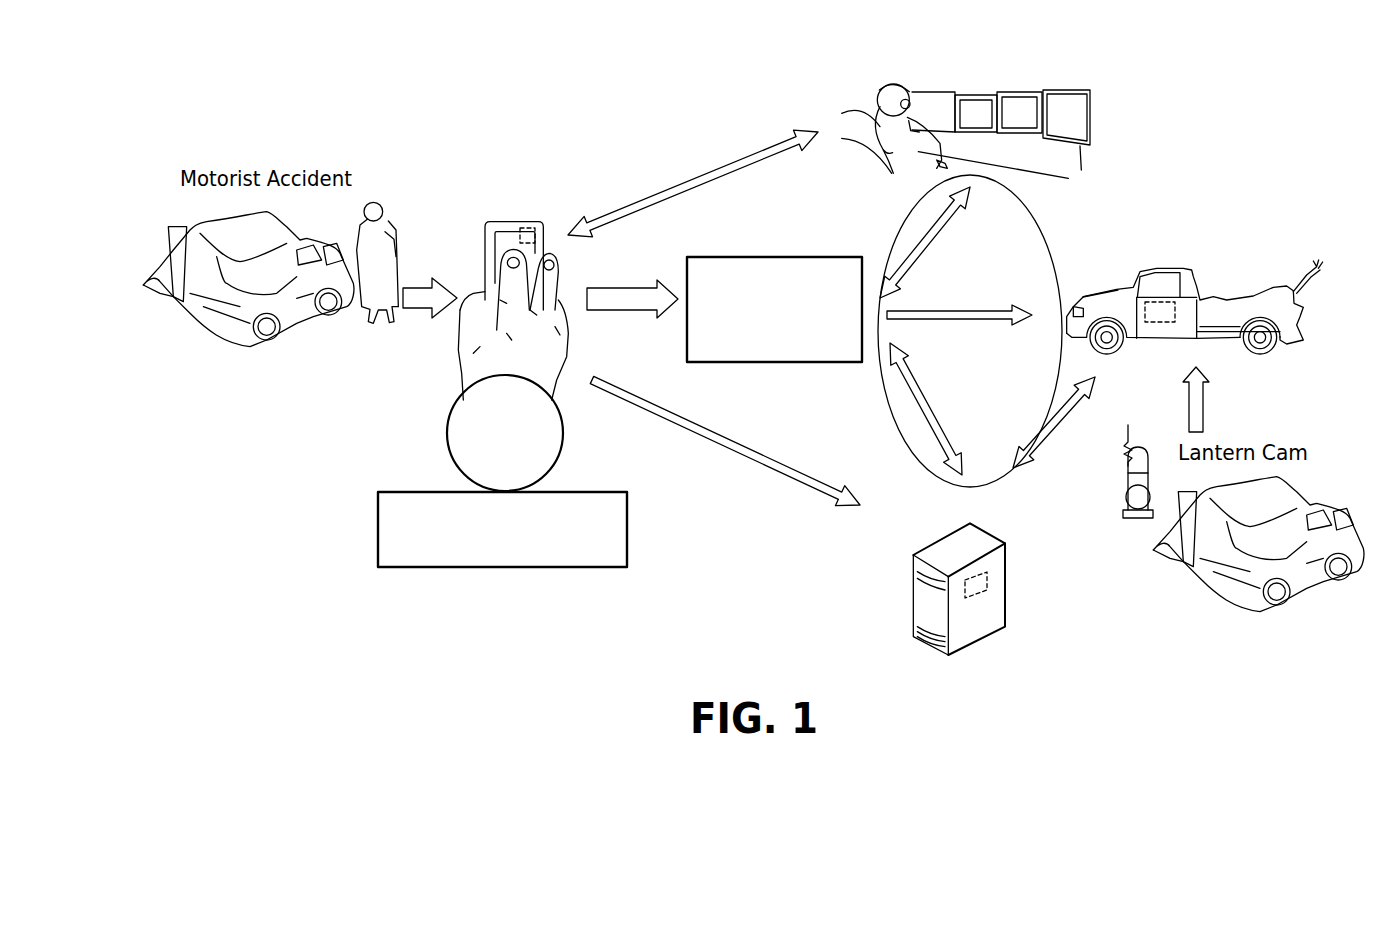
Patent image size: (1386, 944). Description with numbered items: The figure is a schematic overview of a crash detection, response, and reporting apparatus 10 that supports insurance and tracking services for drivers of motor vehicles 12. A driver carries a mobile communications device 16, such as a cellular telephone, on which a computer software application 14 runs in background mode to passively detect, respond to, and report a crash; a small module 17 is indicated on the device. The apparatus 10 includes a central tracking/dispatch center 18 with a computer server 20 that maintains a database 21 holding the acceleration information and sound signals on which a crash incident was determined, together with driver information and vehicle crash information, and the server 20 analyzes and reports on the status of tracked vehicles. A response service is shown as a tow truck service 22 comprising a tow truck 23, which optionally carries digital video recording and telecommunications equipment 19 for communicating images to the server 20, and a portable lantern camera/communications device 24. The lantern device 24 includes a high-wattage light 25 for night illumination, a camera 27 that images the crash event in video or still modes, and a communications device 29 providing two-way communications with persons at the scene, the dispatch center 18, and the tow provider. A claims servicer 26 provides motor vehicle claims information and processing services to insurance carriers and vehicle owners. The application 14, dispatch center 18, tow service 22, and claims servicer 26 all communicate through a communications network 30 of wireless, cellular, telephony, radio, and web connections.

The crash detection, response, and reporting apparatus 10 is at (548, 79).
The motor vehicle 12 is at (378, 205).
The computer software application 14 is at (627, 535).
The mobile communications device 16 is at (516, 222).
The mobile device sensor module 17 is at (530, 230).
The central tracking/dispatch center 18 is at (890, 92).
The digital video recording and telecommunications equipment 19 is at (1158, 322).
The computer server 20 is at (935, 551).
The database 21 is at (990, 590).
The tow truck service 22 is at (1205, 282).
The tow truck 23 is at (1118, 298).
The portable lantern camera/communications device 24 is at (1138, 520).
The high-wattage light 25 is at (1126, 500).
The claims servicer 26 is at (785, 257).
The camera 27 is at (1124, 478).
The communications device 29 is at (1125, 430).
The communications network 30 is at (886, 408).